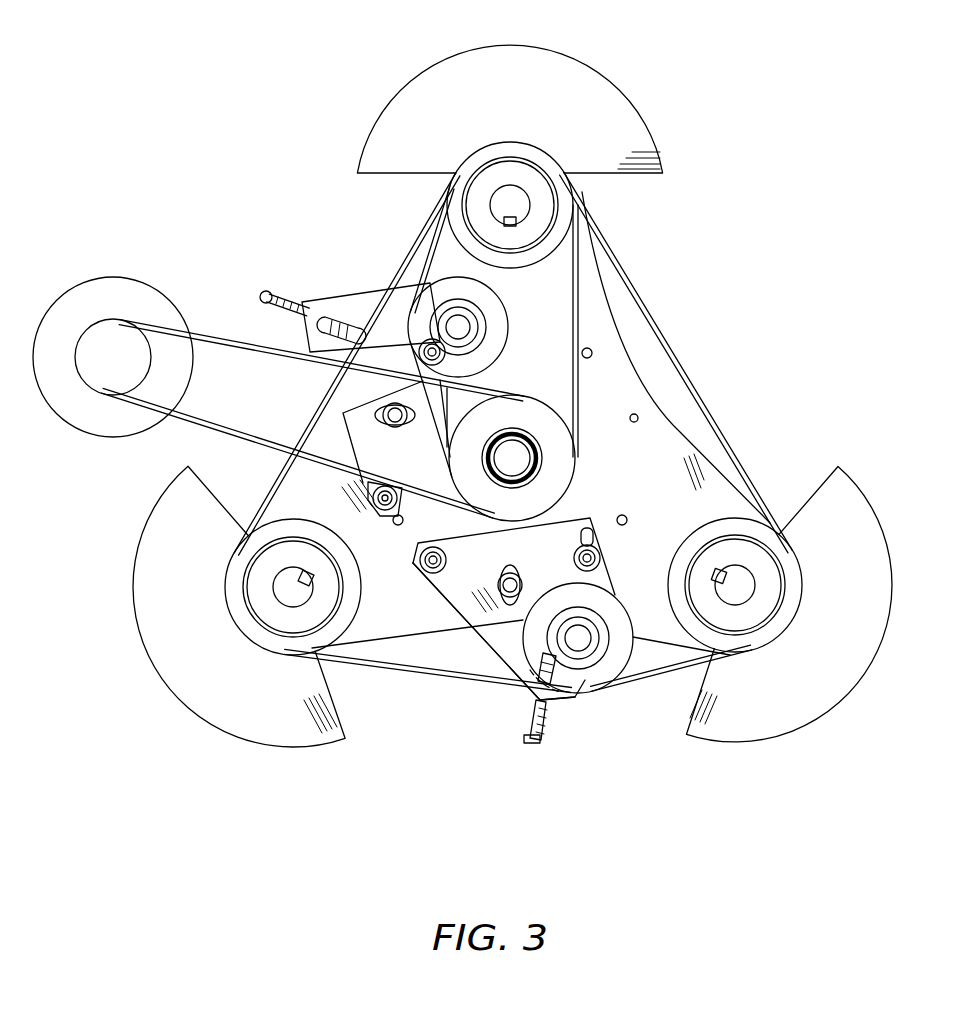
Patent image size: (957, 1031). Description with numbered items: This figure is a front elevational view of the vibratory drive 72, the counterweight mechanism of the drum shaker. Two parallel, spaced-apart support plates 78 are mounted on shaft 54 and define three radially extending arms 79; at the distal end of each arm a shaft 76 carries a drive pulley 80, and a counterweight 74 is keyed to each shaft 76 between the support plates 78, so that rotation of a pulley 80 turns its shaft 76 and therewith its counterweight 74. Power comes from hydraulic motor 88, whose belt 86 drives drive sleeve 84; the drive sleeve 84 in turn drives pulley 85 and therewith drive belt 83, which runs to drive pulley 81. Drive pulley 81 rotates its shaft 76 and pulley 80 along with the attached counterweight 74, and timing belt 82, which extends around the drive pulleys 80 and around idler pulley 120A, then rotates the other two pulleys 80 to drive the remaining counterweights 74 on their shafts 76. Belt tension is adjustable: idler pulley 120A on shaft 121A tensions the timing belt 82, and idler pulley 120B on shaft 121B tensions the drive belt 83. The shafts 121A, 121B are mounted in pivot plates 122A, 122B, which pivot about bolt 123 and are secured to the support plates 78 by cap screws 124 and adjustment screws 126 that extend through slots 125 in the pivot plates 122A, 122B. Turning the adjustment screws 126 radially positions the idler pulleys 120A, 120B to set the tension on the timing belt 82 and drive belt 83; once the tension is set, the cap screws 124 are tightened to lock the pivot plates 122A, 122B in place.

The shaft 54 is at (522, 453).
The vibratory drive 72 is at (809, 276).
The counterweight 74 is at (577, 60).
The shaft 76 is at (520, 210).
The support plate 78 is at (638, 393).
The radially extending arm 79 is at (603, 293).
The drive pulley 80 is at (567, 227).
The drive pulley 81 is at (589, 205).
The timing belt 82 is at (400, 258).
The drive belt 83 is at (423, 225).
The drive sleeve 84 is at (567, 472).
The pulley 85 is at (572, 458).
The belt 86 is at (203, 427).
The hydraulic motor 88 is at (118, 278).
The idler pulley 120A is at (597, 693).
The idler pulley 120B is at (400, 282).
The shaft 121A is at (582, 640).
The shaft 121B is at (458, 327).
The pivot plate 122A is at (507, 653).
The pivot plate 122B is at (310, 302).
The bolt 123 is at (340, 424).
The cap screw 124 is at (383, 413).
The slot 125 is at (445, 357).
The adjustment screw 126 is at (267, 300).